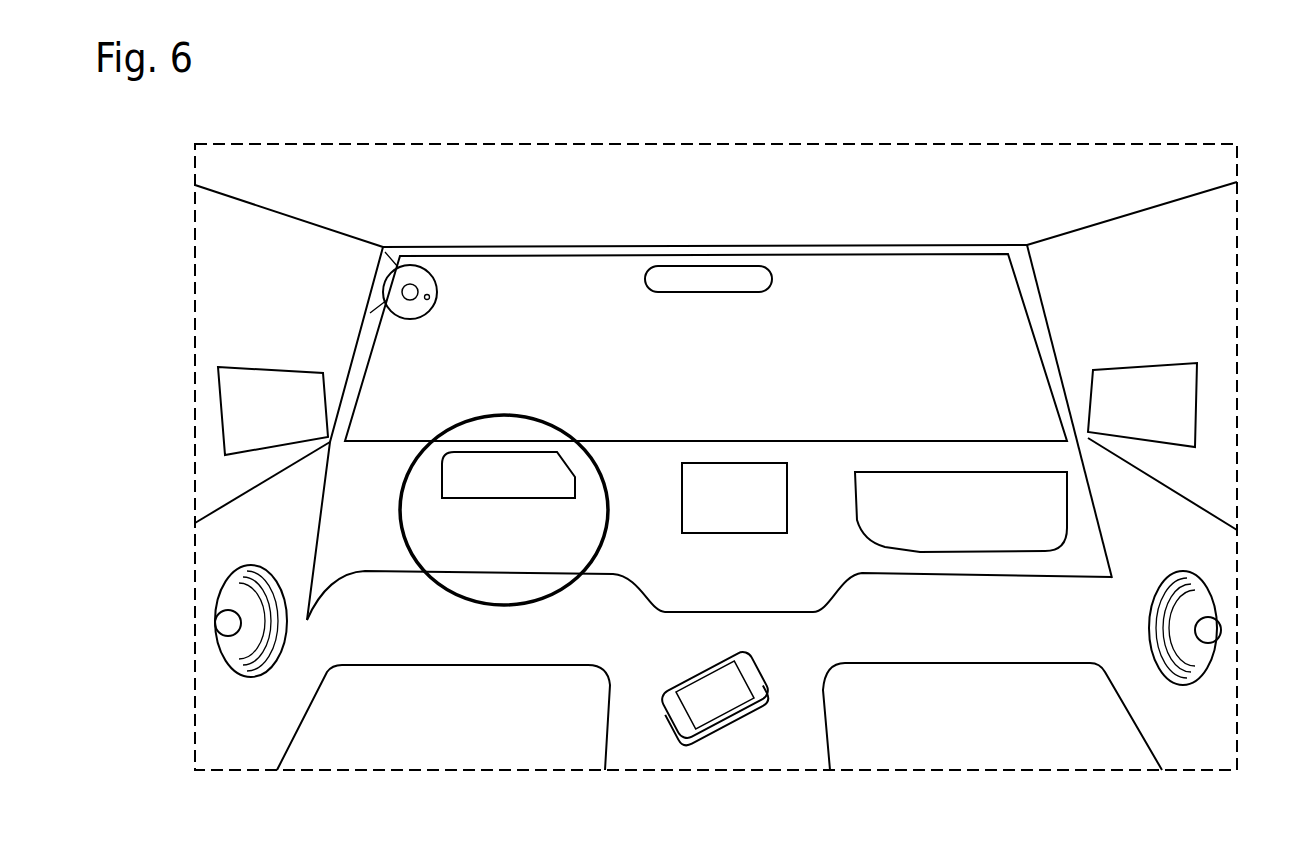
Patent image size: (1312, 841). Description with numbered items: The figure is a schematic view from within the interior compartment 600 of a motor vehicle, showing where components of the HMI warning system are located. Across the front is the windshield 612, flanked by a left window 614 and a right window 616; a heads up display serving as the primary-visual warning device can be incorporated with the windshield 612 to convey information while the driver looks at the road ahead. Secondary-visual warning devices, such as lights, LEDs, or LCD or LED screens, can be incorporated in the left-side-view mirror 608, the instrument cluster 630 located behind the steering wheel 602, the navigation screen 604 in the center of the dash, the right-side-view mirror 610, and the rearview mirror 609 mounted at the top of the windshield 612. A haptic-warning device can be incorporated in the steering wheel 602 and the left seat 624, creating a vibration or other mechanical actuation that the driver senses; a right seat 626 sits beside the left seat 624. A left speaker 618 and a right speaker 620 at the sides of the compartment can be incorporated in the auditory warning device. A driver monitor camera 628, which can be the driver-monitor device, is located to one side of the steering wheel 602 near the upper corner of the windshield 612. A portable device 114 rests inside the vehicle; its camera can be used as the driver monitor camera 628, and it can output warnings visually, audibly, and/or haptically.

The interior compartment 600 is at (690, 143).
The steering wheel 602 is at (482, 415).
The navigation screen 604 is at (777, 462).
The left-side-view mirror 608 is at (218, 412).
The rearview mirror 609 is at (755, 268).
The right-side-view mirror 610 is at (1200, 412).
The windshield 612 is at (640, 252).
The left window 614 is at (318, 227).
The right window 616 is at (1145, 212).
The left speaker 618 is at (215, 610).
The right speaker 620 is at (1213, 614).
The left seat 624 is at (478, 666).
The right seat 626 is at (993, 663).
The driver monitor camera 628 is at (437, 272).
The instrument cluster 630 is at (560, 455).
The portable device 114 is at (688, 686).